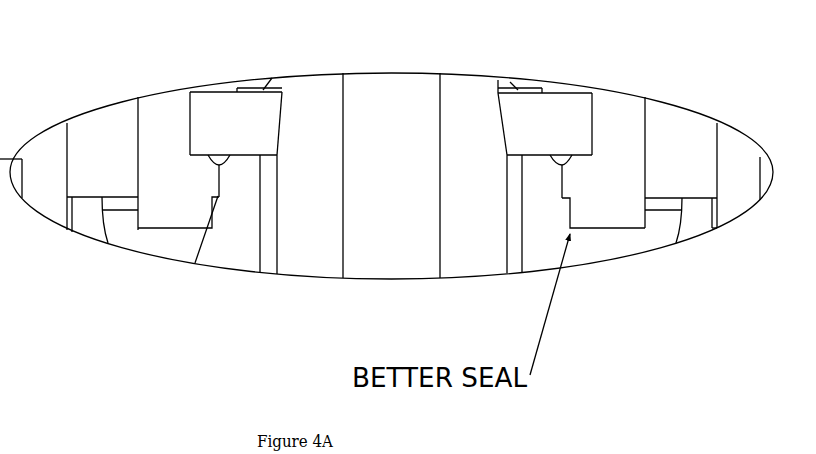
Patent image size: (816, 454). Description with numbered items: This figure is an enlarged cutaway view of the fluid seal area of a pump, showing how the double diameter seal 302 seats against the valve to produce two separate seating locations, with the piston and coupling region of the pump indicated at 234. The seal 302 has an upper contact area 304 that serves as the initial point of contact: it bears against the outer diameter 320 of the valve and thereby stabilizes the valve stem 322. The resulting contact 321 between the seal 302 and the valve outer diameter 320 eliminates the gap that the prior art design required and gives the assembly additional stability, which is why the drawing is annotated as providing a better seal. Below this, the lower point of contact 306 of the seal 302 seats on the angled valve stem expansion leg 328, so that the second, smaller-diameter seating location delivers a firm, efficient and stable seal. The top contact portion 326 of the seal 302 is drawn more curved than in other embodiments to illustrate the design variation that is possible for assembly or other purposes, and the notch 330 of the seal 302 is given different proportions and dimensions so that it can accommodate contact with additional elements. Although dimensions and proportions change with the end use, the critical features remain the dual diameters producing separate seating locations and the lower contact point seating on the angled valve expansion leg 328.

The seal flap 234 is at (217, 257).
The double diameter seal 302 is at (150, 218).
The upper contact area 304 is at (222, 194).
The lower point of contact 306 is at (572, 233).
The outer diameter 320 is at (218, 166).
The contact 321 is at (222, 180).
The valve stem 322 is at (462, 262).
The top contact portion 326 is at (203, 173).
The angled valve stem expansion leg 328 is at (563, 224).
The notch 330 is at (565, 205).